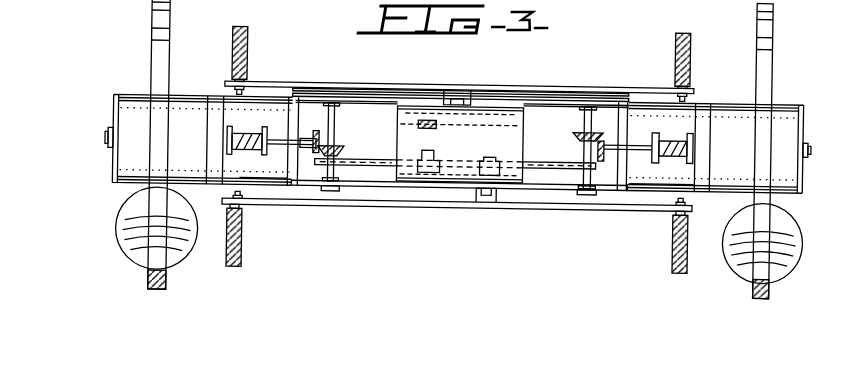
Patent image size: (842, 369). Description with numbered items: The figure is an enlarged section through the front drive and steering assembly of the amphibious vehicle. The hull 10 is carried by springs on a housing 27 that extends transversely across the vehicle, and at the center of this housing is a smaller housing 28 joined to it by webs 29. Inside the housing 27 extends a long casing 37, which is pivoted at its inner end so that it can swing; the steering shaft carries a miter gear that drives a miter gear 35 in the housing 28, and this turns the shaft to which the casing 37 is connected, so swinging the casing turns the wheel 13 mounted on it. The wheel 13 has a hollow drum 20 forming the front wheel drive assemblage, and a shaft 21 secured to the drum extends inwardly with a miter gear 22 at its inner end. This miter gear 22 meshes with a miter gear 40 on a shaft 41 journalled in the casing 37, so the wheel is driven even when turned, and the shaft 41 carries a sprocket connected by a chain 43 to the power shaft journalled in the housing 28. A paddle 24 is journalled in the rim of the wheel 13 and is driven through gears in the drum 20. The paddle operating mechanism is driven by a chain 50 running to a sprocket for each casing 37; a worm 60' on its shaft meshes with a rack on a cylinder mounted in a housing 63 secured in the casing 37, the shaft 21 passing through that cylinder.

The hull 10 is at (230, 42).
The wheel 13 is at (153, 23).
The hollow drum 20 is at (122, 95).
The shaft 21 is at (106, 139).
The miter gear 22 is at (326, 148).
The paddle 24 is at (123, 222).
The housing 27 is at (321, 78).
The housing 28 is at (515, 124).
The webs 29 is at (456, 85).
The miter gear 35 is at (420, 123).
The casing 37 is at (321, 183).
The miter gear 40 is at (578, 123).
The shaft 41 is at (341, 177).
The chain 43 is at (366, 157).
The chain 50 is at (381, 86).
The worm 60' is at (461, 142).
The housing 63 is at (271, 175).